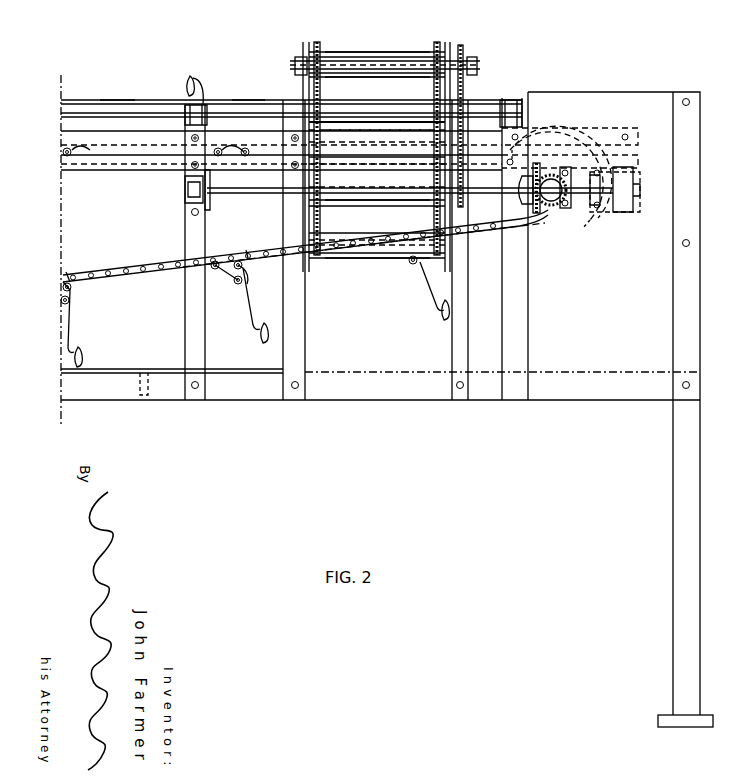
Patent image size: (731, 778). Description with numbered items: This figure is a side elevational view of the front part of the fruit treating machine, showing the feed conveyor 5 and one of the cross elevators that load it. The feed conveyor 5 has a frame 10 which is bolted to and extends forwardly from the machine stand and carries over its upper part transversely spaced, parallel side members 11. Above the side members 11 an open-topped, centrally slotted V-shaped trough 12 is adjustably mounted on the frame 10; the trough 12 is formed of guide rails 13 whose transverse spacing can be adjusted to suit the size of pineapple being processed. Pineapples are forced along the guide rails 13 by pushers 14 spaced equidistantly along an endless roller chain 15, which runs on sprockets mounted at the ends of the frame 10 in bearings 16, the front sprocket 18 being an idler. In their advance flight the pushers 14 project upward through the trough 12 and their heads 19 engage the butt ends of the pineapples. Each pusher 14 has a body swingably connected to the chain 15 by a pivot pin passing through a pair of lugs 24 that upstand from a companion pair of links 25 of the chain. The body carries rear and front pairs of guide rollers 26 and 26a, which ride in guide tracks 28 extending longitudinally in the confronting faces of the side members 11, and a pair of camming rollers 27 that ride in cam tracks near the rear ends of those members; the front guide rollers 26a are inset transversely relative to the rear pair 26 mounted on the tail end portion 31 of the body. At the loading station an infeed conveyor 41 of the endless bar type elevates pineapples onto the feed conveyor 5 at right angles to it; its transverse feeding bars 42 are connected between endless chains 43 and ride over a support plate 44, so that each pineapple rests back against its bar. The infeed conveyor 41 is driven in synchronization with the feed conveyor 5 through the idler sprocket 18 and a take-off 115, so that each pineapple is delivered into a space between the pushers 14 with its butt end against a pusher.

The feed conveyor 5 is at (121, 92).
The frame 10 is at (377, 400).
The side members 11 is at (63, 137).
The trough 12 is at (252, 92).
The guide rails 13 is at (146, 100).
The pushers 14 is at (193, 68).
The roller chain 15 is at (117, 266).
The bearings 16 is at (570, 208).
The front sprocket 18 is at (525, 206).
The heads 19 is at (186, 86).
The lugs 24 is at (72, 287).
The links 25 is at (68, 274).
The rear guide rollers 26 is at (77, 148).
The front guide rollers 26a is at (70, 300).
The camming rollers 27 is at (237, 285).
The guide tracks 28 is at (130, 158).
The tail end portion 31 is at (249, 152).
The infeed conveyor 41 is at (379, 43).
The feeding bars 42 is at (369, 77).
The endless chains 43 is at (316, 44).
The support plate 44 is at (384, 143).
The take-off 115 is at (545, 206).